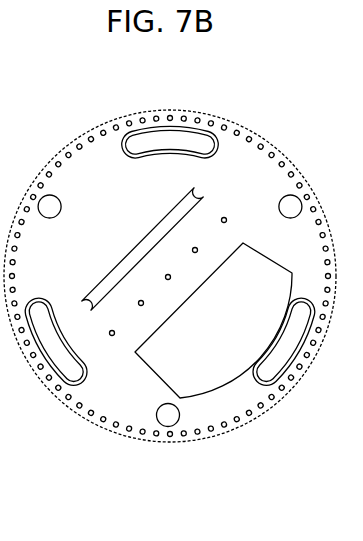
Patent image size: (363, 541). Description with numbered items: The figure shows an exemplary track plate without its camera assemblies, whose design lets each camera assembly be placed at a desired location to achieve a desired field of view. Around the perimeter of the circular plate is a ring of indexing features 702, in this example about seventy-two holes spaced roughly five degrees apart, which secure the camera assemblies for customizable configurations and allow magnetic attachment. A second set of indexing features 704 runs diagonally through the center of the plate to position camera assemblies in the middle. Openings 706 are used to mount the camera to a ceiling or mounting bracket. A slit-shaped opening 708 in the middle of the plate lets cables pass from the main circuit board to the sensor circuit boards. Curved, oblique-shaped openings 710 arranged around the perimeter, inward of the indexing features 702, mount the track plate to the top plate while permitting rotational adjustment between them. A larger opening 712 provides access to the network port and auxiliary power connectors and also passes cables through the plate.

The indexing features 702 is at (128, 125).
The indexing features 704 is at (226, 220).
The openings 706 is at (172, 413).
The slit-shaped opening 708 is at (198, 193).
The curved openings 710 is at (280, 375).
The larger opening 712 is at (168, 372).